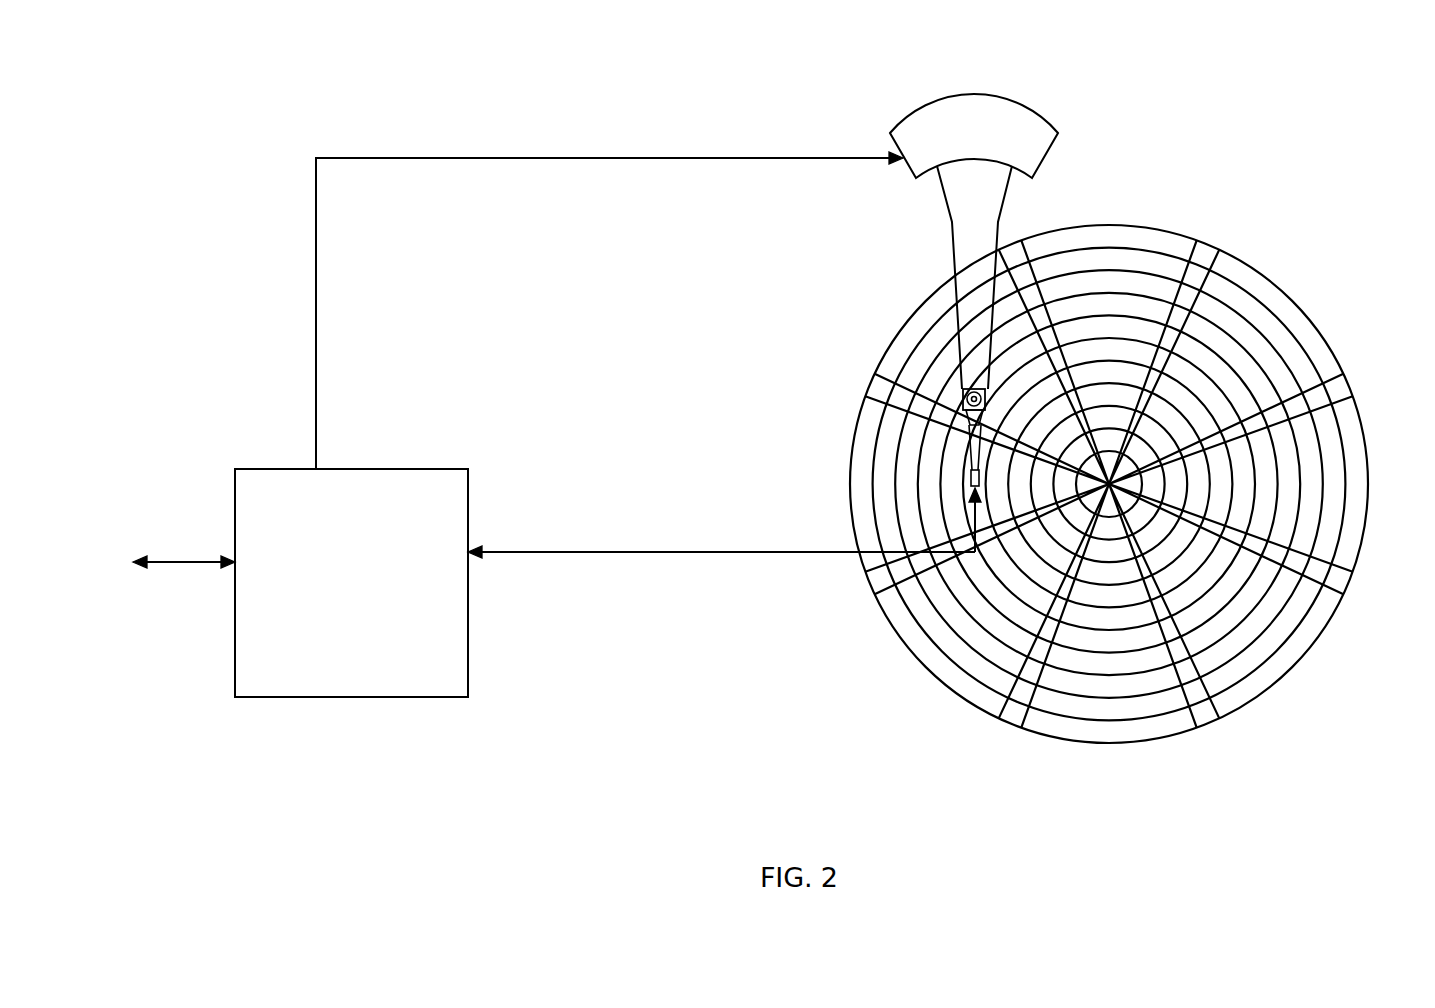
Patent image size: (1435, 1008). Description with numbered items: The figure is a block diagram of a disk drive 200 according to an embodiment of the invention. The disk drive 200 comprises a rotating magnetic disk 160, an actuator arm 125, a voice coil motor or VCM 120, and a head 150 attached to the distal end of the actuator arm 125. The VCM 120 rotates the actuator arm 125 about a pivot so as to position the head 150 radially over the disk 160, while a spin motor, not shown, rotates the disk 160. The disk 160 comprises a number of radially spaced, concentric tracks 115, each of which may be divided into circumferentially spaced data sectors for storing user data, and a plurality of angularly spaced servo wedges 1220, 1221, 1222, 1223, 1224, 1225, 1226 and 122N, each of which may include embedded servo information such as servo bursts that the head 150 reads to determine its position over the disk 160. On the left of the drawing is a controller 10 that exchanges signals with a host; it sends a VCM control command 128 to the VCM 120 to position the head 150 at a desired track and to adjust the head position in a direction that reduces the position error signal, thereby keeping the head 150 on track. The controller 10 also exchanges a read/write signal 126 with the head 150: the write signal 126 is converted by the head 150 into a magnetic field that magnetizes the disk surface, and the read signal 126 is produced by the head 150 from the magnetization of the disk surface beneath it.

The disk drive 200 is at (1363, 87).
The controller 10 is at (416, 469).
The command 128 is at (316, 289).
The write signal 126 is at (684, 554).
The voice coil motor (VCM) 120 is at (908, 176).
The actuator arm 125 is at (960, 260).
The head 150 is at (960, 494).
The rotating magnetic disk 160 is at (1294, 281).
The tracks 115 is at (1107, 262).
The servo wedge 122N is at (1012, 252).
The servo wedge 1220 is at (1210, 252).
The servo wedge 1221 is at (1338, 390).
The servo wedge 1222 is at (1343, 587).
The servo wedge 1223 is at (1201, 722).
The servo wedge 1224 is at (1008, 722).
The servo wedge 1225 is at (873, 585).
The servo wedge 1226 is at (878, 376).